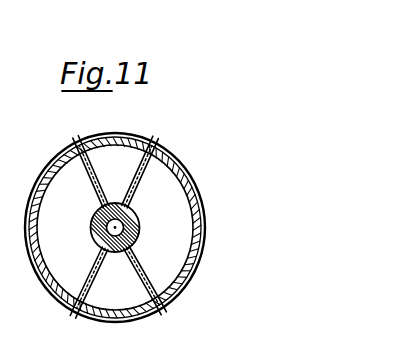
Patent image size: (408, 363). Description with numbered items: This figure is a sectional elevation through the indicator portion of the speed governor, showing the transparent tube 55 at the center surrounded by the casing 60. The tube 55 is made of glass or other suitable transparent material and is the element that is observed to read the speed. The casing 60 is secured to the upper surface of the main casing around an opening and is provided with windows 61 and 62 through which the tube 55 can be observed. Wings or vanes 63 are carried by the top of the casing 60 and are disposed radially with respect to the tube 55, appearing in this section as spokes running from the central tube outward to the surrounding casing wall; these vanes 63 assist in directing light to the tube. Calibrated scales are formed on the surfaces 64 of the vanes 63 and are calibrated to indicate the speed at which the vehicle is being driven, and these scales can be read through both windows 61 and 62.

The tube 55 is at (139, 226).
The casing 60 is at (184, 170).
The window 61 is at (204, 212).
The window 62 is at (30, 196).
The vanes 63 is at (78, 145).
The surfaces of the vanes 64 is at (96, 198).